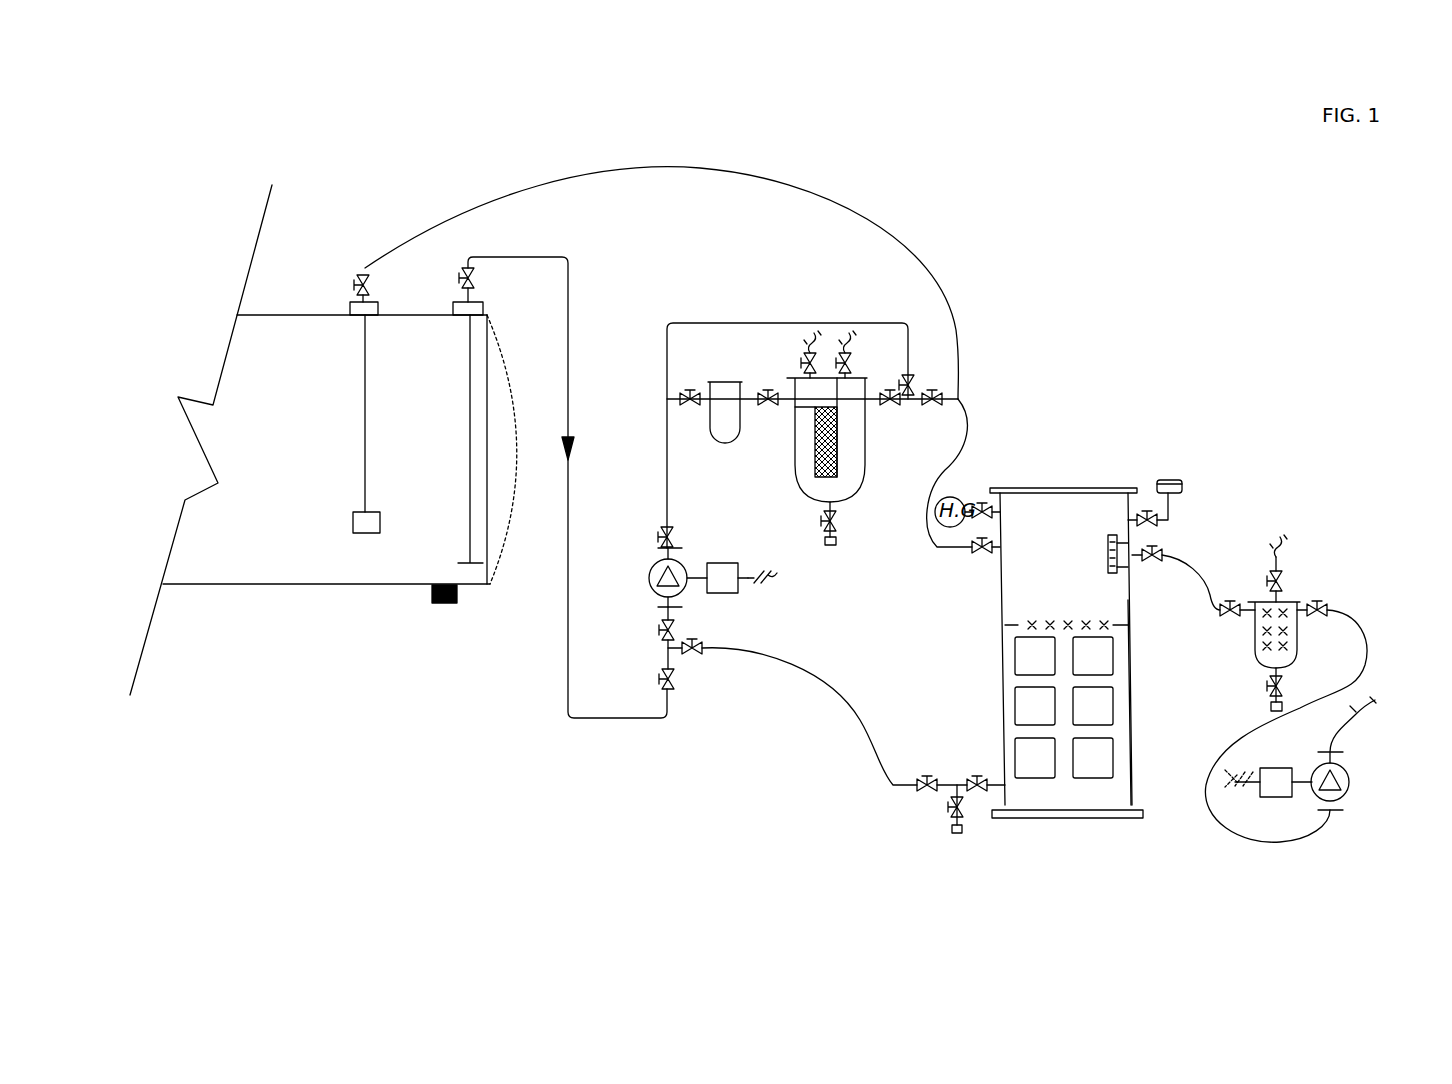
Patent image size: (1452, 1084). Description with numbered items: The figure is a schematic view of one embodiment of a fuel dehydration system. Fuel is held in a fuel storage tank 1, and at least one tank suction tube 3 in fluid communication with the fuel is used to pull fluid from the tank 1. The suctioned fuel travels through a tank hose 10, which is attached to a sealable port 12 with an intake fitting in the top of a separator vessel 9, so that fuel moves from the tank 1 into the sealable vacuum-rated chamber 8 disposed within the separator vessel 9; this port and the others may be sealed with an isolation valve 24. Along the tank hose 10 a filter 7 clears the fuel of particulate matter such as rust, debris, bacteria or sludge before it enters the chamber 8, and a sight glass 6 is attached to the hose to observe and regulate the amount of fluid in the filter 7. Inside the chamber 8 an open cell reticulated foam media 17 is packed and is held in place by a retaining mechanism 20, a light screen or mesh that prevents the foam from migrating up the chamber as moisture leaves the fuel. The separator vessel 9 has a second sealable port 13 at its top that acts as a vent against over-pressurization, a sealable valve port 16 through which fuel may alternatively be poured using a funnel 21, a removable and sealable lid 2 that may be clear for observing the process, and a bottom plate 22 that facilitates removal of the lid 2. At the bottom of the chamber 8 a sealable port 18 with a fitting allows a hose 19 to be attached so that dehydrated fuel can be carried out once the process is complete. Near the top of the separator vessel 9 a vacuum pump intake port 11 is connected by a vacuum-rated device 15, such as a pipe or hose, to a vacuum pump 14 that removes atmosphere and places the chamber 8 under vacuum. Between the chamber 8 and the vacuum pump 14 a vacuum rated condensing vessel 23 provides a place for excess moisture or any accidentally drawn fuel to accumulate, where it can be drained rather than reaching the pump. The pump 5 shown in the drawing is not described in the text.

The fuel storage tank 1 is at (235, 567).
The removable lid 2 is at (1100, 488).
The tank suction tube 3 is at (367, 435).
The transfer pump 5 is at (662, 607).
The sight glass 6 is at (722, 382).
The filter 7 is at (857, 397).
The chamber 8 is at (1062, 547).
The separator vessel 9 is at (1128, 730).
The tank hose 10 is at (485, 263).
The vacuum pump intake port 11 is at (1140, 550).
The sealable port 12 is at (1002, 537).
The second sealable port 13 is at (1000, 503).
The vacuum pump 14 is at (1350, 782).
The vacuum-rated device 15 is at (1297, 843).
The sealable valve port 16 is at (1140, 513).
The foam media 17 is at (1100, 757).
The sealable port 18 is at (992, 787).
The hose 19 is at (872, 753).
The retaining mechanism 20 is at (1120, 625).
The funnel 21 is at (1185, 487).
The bottom plate 22 is at (1137, 515).
The condensing vessel 23 is at (1297, 602).
The isolation valve 24 is at (363, 275).